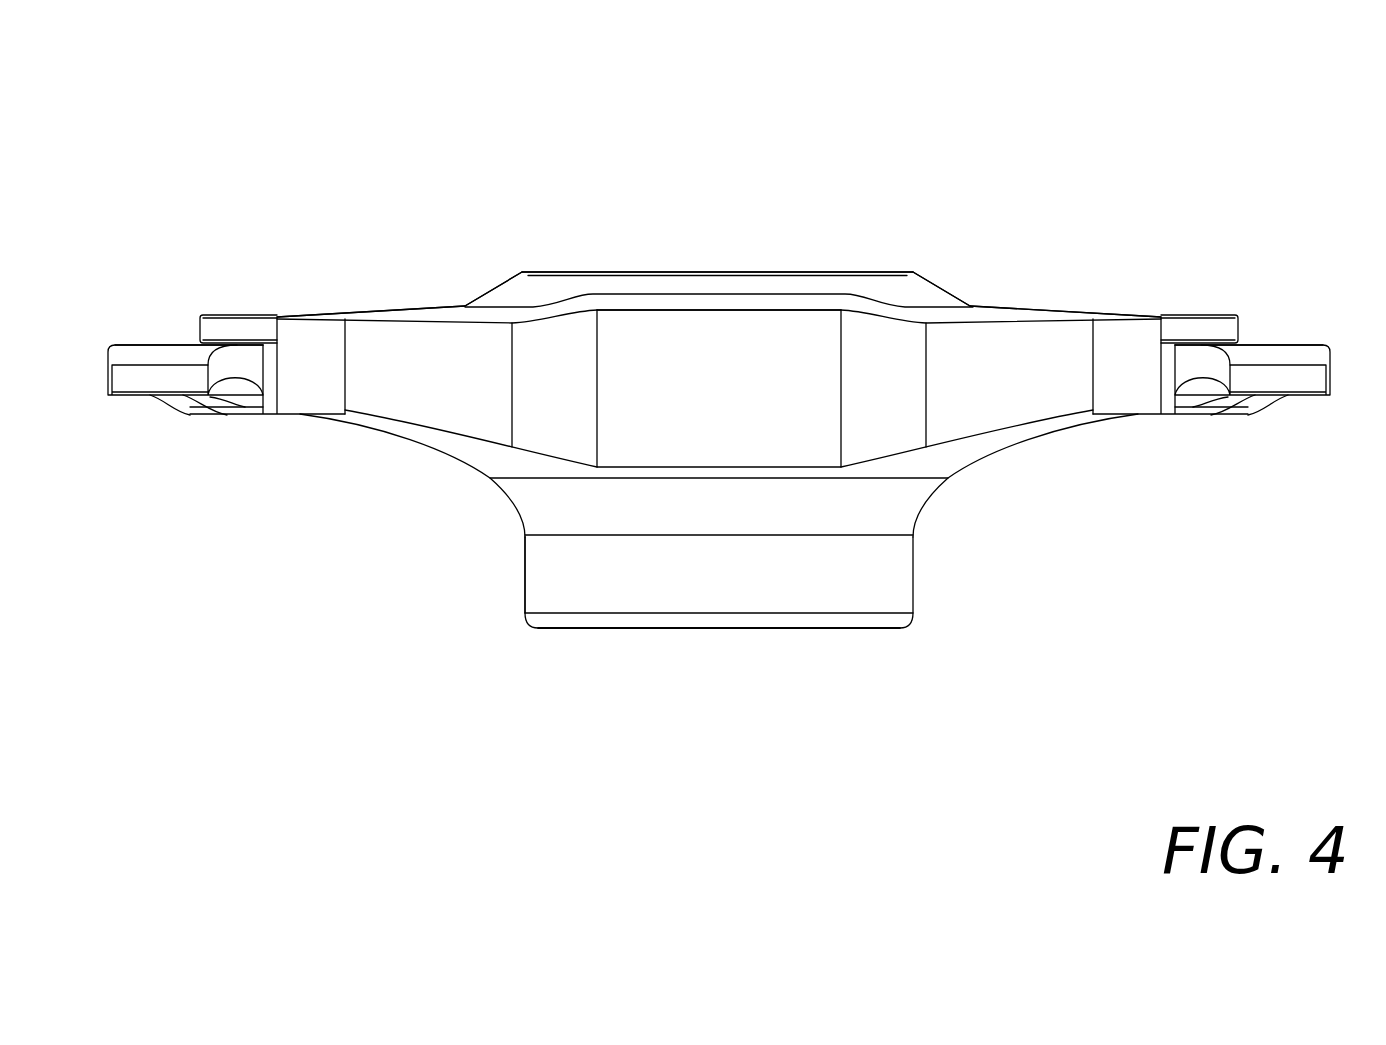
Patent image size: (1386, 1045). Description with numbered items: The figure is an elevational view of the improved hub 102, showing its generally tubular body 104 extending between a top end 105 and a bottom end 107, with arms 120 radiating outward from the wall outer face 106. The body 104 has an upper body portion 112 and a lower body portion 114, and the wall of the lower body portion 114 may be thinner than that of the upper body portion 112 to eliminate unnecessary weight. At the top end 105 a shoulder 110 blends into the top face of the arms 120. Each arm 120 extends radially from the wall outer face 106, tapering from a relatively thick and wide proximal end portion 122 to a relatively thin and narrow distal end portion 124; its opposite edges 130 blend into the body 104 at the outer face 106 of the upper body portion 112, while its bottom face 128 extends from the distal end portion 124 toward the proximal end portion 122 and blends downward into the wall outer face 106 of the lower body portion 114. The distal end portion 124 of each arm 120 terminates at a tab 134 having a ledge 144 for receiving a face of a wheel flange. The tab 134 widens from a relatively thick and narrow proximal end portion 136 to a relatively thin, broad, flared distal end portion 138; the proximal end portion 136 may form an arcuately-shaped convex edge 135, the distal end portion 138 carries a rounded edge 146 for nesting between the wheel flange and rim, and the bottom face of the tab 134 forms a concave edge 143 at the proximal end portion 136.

The hub 102 is at (945, 188).
The body 104 is at (897, 572).
The top end 105 is at (712, 270).
The wall outer face 106 is at (742, 410).
The bottom end 107 is at (710, 630).
The shoulder 110 is at (948, 292).
The upper body portion 112 is at (782, 332).
The lower body portion 114 is at (525, 571).
The arms 120 is at (378, 308).
The proximal end portion 122 is at (460, 305).
The distal end portion 124 is at (240, 314).
The bottom face 128 is at (470, 455).
The edges 130 is at (455, 390).
The tab 134 is at (107, 381).
The convex edge 135 is at (213, 328).
The proximal end portion 136 is at (268, 341).
The distal end portion 138 is at (260, 415).
The concave edge 143 is at (185, 414).
The ledge 144 is at (182, 340).
The rounded edge 146 is at (142, 352).